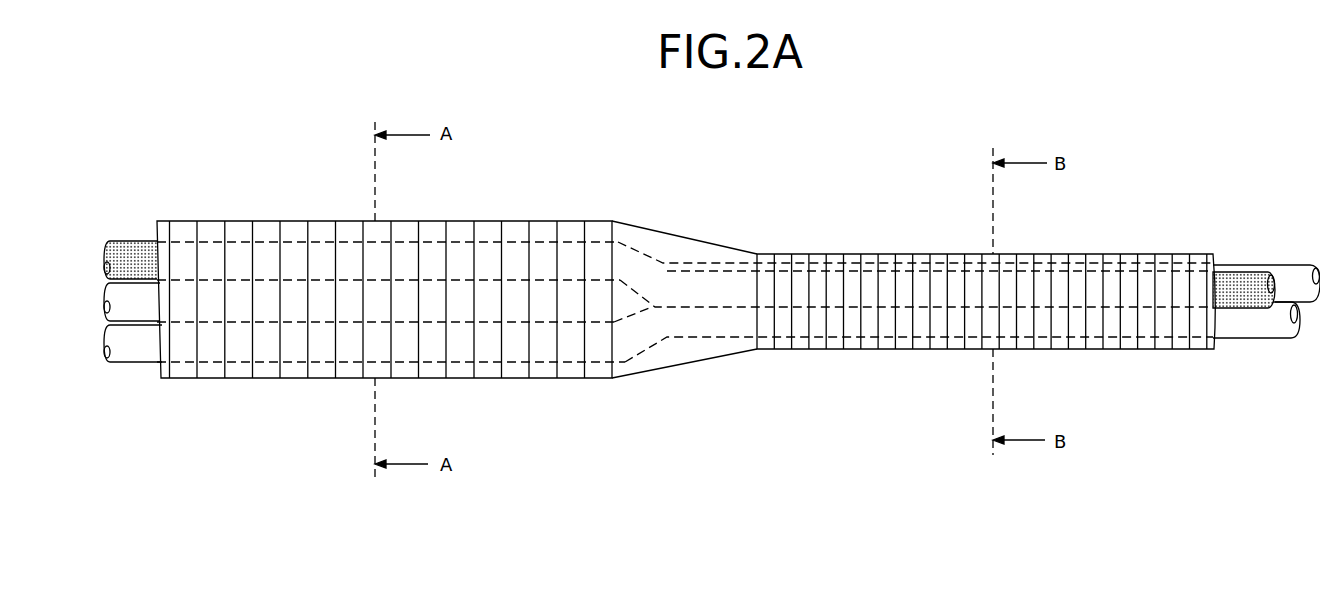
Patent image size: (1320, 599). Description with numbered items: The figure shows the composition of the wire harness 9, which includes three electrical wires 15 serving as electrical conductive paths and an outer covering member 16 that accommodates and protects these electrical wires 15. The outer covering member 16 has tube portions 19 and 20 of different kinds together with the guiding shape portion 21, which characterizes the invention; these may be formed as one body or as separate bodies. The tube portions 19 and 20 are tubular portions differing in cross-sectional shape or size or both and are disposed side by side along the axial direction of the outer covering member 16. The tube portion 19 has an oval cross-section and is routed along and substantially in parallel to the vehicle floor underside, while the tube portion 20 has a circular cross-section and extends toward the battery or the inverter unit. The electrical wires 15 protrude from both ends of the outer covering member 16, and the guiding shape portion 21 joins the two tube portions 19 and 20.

The wire harness 9 is at (786, 180).
The electrical wire 15 is at (122, 247).
The outer covering member 16 is at (540, 219).
The tube portion 19 is at (290, 378).
The tube portion 20 is at (883, 350).
The guiding shape portion 21 is at (688, 363).